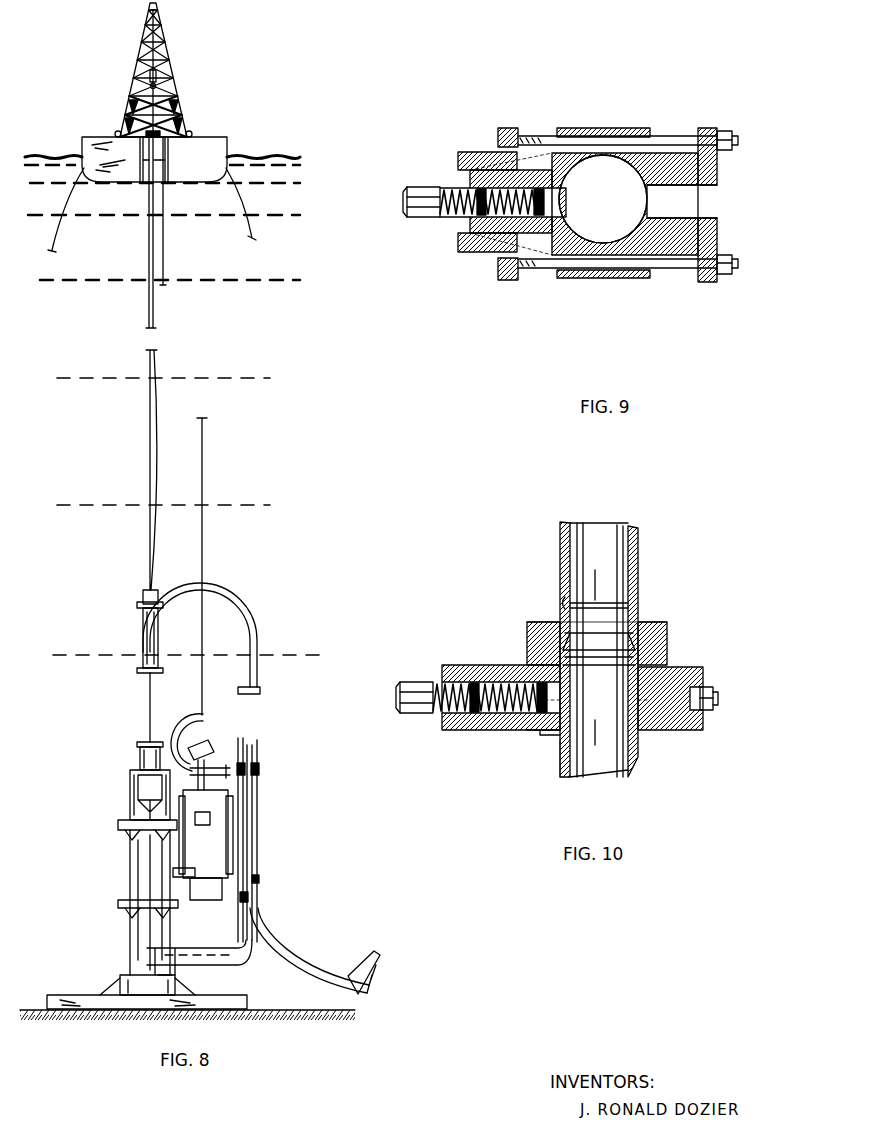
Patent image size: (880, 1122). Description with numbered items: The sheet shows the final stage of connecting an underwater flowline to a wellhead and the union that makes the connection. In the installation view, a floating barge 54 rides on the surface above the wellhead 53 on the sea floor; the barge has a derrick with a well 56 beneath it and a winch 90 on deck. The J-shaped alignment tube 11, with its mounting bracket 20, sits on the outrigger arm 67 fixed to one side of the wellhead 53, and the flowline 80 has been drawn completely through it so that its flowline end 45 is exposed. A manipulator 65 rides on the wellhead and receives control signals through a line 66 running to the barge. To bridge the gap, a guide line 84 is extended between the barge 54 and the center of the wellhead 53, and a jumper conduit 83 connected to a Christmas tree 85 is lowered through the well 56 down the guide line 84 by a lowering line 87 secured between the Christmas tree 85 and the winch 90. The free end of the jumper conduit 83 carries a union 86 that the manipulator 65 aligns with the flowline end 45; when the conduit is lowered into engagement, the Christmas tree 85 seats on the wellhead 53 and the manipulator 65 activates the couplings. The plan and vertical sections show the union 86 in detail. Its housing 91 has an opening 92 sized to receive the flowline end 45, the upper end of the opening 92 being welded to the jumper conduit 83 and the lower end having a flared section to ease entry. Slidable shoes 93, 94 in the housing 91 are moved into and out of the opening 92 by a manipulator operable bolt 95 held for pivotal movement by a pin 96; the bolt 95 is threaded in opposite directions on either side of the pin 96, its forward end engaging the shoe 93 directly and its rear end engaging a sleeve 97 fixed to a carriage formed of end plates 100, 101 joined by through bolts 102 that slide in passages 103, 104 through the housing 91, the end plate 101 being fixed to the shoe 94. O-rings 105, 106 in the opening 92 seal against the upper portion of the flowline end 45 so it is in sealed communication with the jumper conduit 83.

In FIG. 8, the J-shaped alignment tube 11 is at (272, 958).
In FIG. 8, the mounting bracket 20 is at (238, 946).
In FIG. 8, the flowline end 45 is at (250, 745).
In FIG. 10, the flowline end 45 is at (560, 745).
In FIG. 8, the wellhead 53 is at (114, 940).
In FIG. 8, the floating barge 54 is at (187, 111).
In FIG. 8, the well 56 is at (144, 184).
In FIG. 8, the manipulator 65 is at (212, 816).
In FIG. 8, the line 66 is at (204, 547).
In FIG. 8, the outrigger arm 67 is at (195, 966).
In FIG. 8, the flowline 80 is at (357, 989).
In FIG. 8, the jumper conduit 83 is at (246, 605).
In FIG. 10, the jumper conduit 83 is at (639, 573).
In FIG. 8, the guide line 84 is at (149, 697).
In FIG. 8, the Christmas tree 85 is at (142, 650).
In FIG. 8, the union 86 is at (259, 692).
In FIG. 9, the union 86 is at (617, 108).
In FIG. 10, the union 86 is at (653, 603).
In FIG. 8, the lowering line 87 is at (151, 521).
In FIG. 8, the winch 90 is at (118, 133).
In FIG. 9, the housing 91 is at (567, 279).
In FIG. 10, the housing 91 is at (666, 631).
In FIG. 9, the opening 92 is at (629, 168).
In FIG. 10, the opening 92 is at (578, 603).
In FIG. 9, the slidable shoe 93 is at (497, 246).
In FIG. 10, the slidable shoe 93 is at (512, 726).
In FIG. 9, the slidable shoe 94 is at (720, 205).
In FIG. 10, the slidable shoe 94 is at (701, 690).
In FIG. 9, the manipulator operable bolt 95 is at (408, 202).
In FIG. 10, the manipulator operable bolt 95 is at (421, 713).
In FIG. 9, the pin 96 is at (470, 231).
In FIG. 9, the sleeve 97 is at (456, 181).
In FIG. 9, the end plate 100 is at (479, 150).
In FIG. 9, the end plate 101 is at (720, 180).
In FIG. 9, the through bolt 102 is at (667, 140).
In FIG. 9, the passage 103 is at (580, 126).
In FIG. 9, the passage 104 is at (631, 277).
In FIG. 10, the O-ring 105 is at (641, 661).
In FIG. 10, the O-ring 106 is at (641, 668).